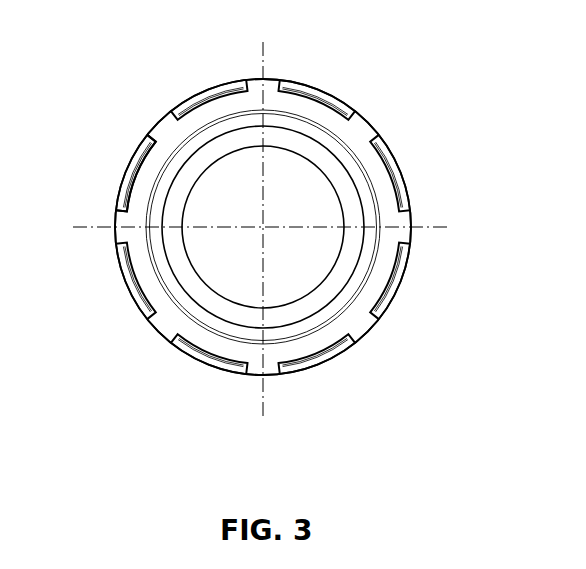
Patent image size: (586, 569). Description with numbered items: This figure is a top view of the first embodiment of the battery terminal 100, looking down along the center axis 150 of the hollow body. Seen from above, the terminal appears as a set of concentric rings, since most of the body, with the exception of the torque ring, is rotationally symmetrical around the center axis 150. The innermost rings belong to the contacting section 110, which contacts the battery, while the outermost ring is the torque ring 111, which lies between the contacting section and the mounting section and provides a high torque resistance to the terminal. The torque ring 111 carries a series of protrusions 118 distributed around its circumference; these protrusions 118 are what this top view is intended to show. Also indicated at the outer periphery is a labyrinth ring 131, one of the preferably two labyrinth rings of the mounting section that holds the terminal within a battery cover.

The battery terminal 100 is at (350, 78).
The contacting section 110 is at (345, 160).
The torque ring 111 is at (413, 192).
The protrusions 118 is at (272, 88).
The labyrinth ring 131 is at (124, 176).
The center axis 150 is at (262, 223).